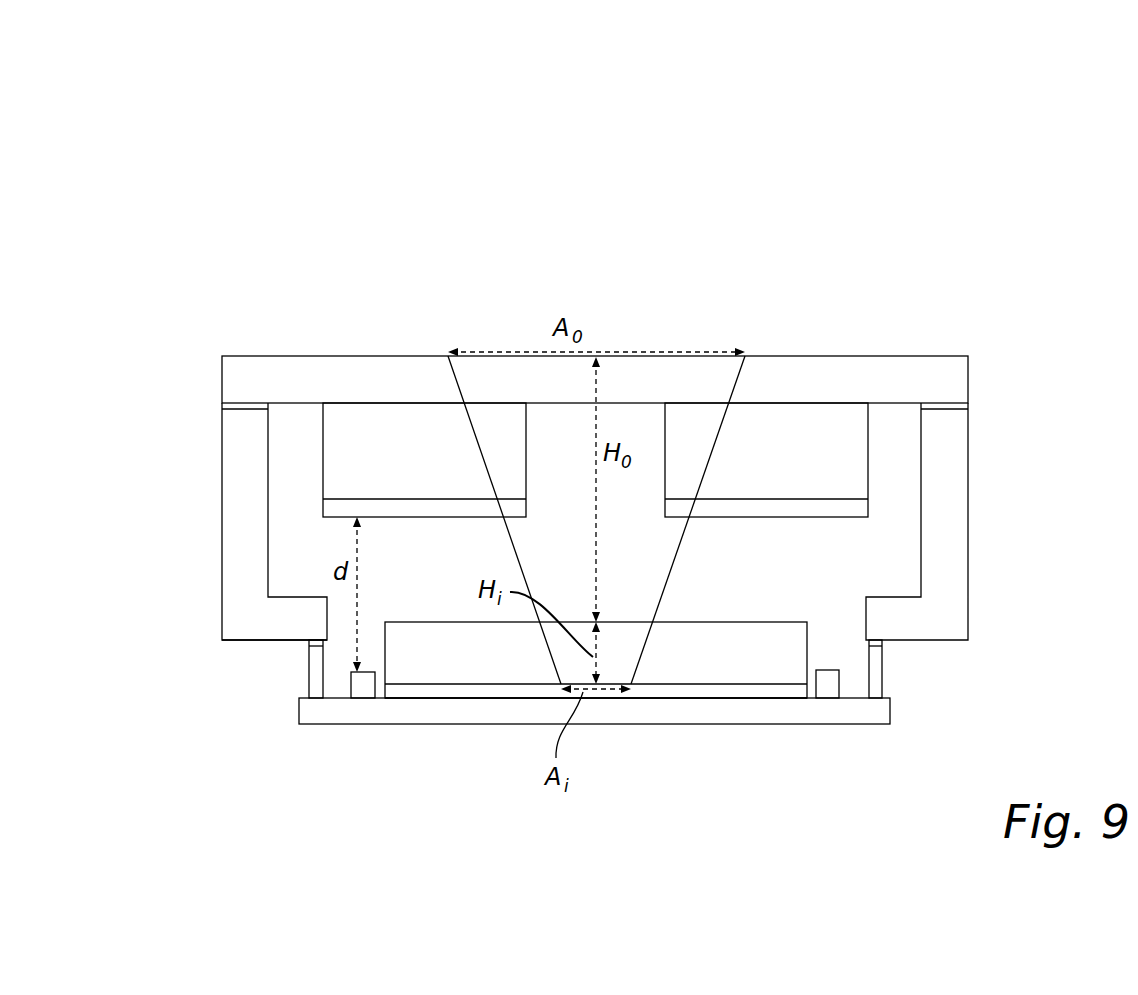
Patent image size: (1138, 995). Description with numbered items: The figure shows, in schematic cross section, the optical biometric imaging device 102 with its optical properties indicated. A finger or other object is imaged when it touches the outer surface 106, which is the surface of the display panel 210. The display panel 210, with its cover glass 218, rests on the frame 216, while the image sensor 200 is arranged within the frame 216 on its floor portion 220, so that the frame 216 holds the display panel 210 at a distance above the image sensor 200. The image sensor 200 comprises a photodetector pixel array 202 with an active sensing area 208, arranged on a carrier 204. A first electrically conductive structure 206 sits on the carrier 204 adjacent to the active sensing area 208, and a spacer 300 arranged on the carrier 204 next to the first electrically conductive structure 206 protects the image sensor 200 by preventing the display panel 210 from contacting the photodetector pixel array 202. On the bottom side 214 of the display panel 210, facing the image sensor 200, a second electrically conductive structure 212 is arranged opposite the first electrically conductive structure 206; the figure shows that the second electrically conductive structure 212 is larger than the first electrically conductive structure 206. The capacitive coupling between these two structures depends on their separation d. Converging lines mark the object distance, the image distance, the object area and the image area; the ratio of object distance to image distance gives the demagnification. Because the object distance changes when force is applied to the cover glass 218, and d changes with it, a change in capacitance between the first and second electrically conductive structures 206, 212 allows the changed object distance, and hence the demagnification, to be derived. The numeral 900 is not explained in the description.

The optical biometric imaging device 102 is at (426, 174).
The outer surface 106 is at (280, 356).
The frame 216 is at (255, 445).
The cover glass 218 is at (857, 385).
The display panel 210 is at (841, 435).
The second electrically conductive structure 212 is at (357, 500).
The image sensor 200 is at (867, 577).
The first electrically conductive structure 206 is at (366, 675).
The spacer 300 is at (316, 685).
The floor portion 220 is at (270, 632).
The bottom side 214 is at (433, 500).
The active sensing area 208 is at (702, 683).
The photodetector pixel array 202 is at (727, 692).
The carrier 204 is at (677, 712).
The sensor bond layer 900 is at (767, 660).